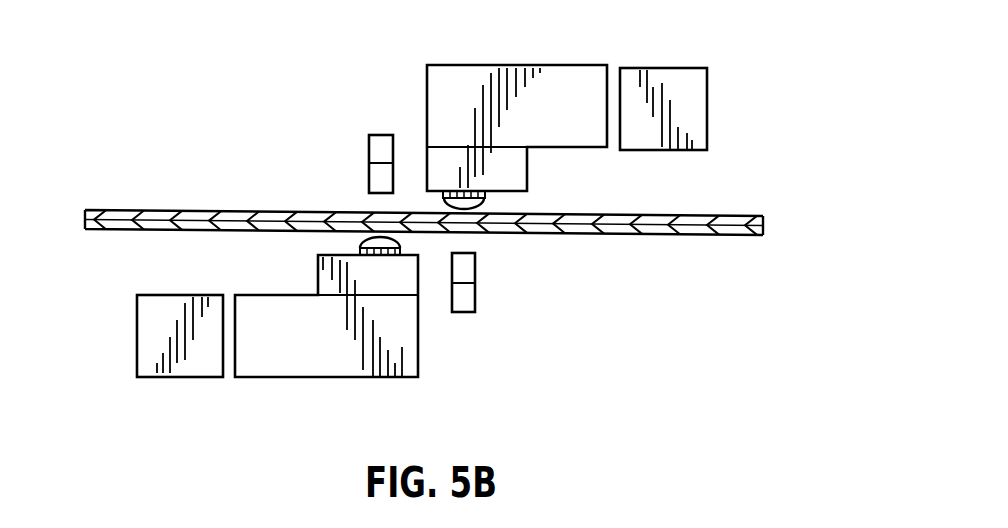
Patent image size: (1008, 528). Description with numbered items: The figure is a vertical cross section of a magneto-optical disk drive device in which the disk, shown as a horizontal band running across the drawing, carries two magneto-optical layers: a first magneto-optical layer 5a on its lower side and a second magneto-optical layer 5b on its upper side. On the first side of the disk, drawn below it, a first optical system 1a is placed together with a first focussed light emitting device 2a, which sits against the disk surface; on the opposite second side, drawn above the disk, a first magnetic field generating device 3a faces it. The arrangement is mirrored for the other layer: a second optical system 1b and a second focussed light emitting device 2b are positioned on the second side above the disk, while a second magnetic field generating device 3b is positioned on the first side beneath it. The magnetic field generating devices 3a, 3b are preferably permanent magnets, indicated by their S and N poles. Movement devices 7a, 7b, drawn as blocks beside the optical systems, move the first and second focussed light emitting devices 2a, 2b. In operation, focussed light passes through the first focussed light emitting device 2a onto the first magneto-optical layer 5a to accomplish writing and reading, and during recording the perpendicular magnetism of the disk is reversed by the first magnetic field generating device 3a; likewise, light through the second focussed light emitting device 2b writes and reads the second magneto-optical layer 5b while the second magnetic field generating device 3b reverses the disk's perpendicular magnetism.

The first optical system 1a is at (405, 343).
The second optical system 1b is at (565, 108).
The first focussed light emitting device 2a is at (360, 242).
The second focussed light emitting device 2b is at (478, 200).
The first magnetic field generating device 3a is at (369, 181).
The second magnetic field generating device 3b is at (465, 312).
The first magneto-optical layer 5a is at (731, 236).
The second magneto-optical layer 5b is at (738, 216).
The movement device 7a is at (157, 318).
The movement device 7b is at (679, 81).